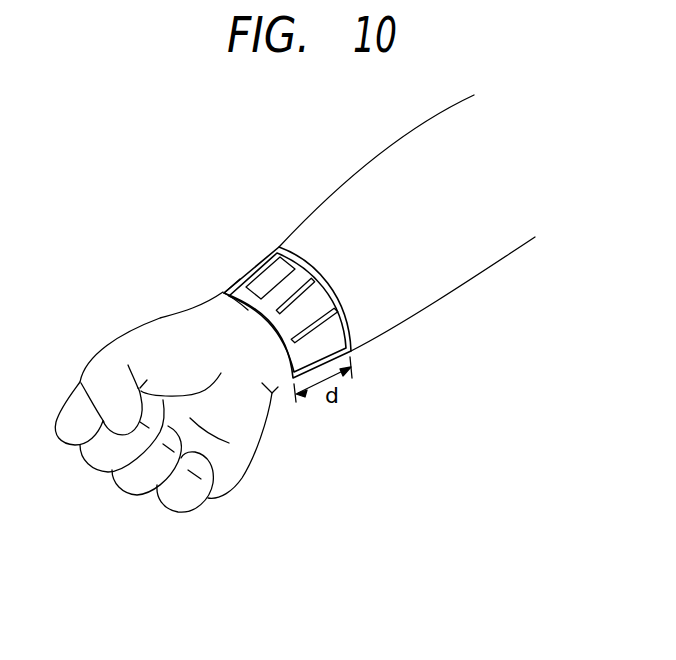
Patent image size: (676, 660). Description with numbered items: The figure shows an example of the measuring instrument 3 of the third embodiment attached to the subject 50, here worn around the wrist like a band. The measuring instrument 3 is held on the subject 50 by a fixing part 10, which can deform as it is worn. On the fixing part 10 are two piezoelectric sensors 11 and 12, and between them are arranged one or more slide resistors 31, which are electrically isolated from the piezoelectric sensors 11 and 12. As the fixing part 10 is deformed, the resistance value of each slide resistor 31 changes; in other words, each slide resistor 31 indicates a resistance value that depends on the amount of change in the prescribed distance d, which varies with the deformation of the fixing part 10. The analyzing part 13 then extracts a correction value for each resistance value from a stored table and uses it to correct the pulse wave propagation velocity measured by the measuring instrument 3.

The measuring instrument 3 is at (172, 151).
The fixing part 10 is at (327, 333).
The piezoelectric sensor 11 is at (277, 244).
The piezoelectric sensor 12 is at (218, 286).
The analyzing part 13 is at (265, 277).
The slide resistor 31 is at (331, 308).
The subject 50 is at (402, 167).